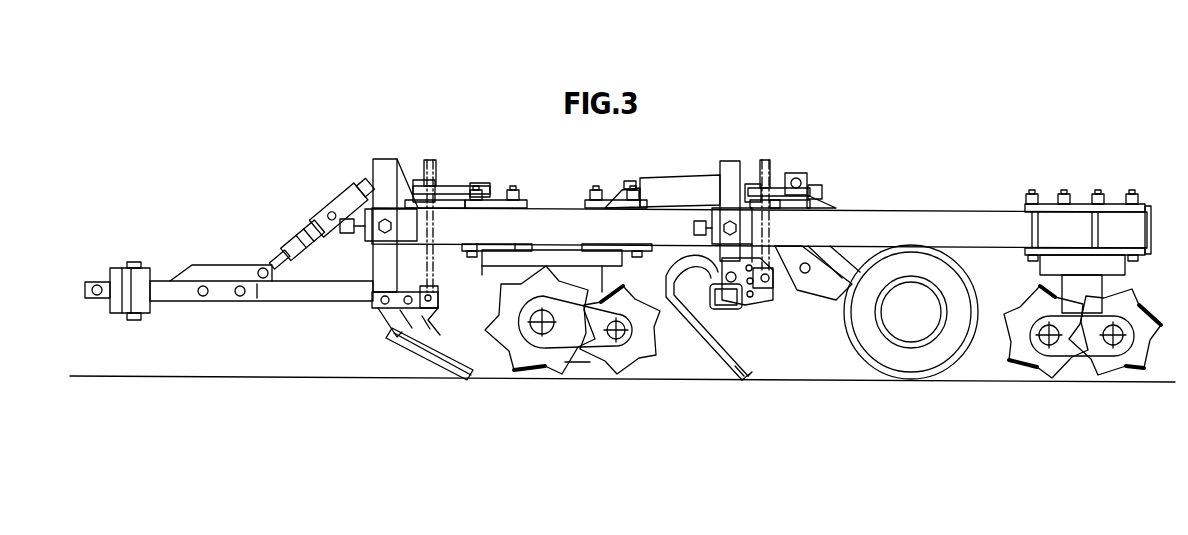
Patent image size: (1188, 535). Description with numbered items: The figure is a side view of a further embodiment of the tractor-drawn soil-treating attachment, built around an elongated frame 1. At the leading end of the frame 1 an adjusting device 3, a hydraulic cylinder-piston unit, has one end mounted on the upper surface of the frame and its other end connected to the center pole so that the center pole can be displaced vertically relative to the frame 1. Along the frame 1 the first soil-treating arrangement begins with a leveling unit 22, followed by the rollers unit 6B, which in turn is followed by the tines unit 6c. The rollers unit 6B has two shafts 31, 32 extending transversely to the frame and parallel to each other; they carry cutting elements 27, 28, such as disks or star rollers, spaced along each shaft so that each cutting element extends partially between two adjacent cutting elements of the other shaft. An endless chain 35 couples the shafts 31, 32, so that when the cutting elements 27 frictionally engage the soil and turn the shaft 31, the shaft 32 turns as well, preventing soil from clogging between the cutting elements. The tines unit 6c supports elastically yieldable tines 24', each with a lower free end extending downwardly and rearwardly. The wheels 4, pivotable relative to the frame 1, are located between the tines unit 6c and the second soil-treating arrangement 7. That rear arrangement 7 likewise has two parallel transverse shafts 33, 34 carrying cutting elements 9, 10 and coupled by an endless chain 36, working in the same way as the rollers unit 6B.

The frame 1 is at (852, 210).
The adjusting device 3 is at (271, 244).
The wheels 4 is at (933, 354).
The second soil-treating arrangement 7 is at (1079, 376).
The cutting elements 9 is at (1023, 357).
The cutting elements 10 is at (1125, 357).
The leveling unit 22 is at (405, 360).
The elastically yieldable tines 24' is at (709, 330).
The cutting elements 27 is at (527, 356).
The cutting elements 28 is at (630, 354).
The shaft 31 is at (536, 320).
The shaft 32 is at (620, 326).
The shaft 33 is at (1047, 332).
The shaft 34 is at (1117, 332).
The endless chain 35 is at (584, 350).
The endless chain 36 is at (1061, 357).
The rollers unit 6B is at (573, 377).
The tines unit 6c is at (729, 382).